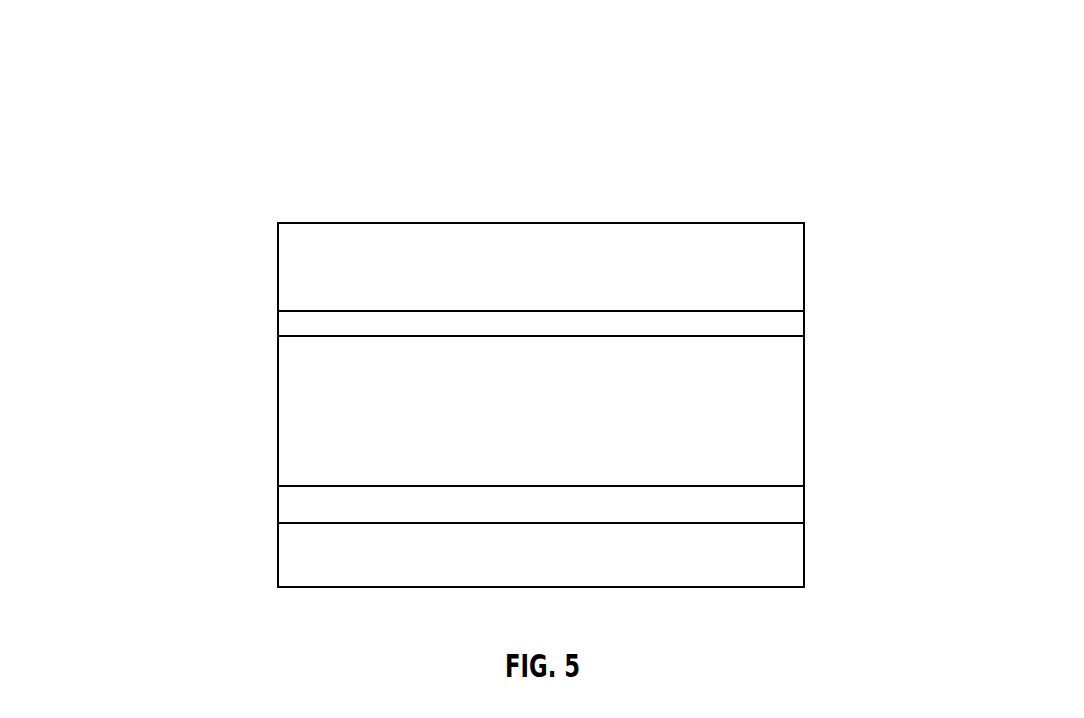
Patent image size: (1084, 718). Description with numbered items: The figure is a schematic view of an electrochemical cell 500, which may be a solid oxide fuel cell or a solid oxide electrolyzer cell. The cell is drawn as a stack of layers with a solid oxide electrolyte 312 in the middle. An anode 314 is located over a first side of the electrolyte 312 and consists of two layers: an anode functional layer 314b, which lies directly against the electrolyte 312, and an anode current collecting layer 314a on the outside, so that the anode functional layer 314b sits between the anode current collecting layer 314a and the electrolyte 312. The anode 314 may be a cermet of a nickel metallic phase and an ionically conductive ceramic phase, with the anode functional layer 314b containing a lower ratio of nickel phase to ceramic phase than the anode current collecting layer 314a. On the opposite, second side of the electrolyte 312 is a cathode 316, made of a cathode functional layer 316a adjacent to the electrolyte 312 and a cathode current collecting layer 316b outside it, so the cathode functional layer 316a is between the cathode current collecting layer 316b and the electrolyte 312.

The electrochemical cell 500 is at (757, 42).
The cathode 316 is at (236, 341).
The cathode current collecting layer 316b is at (814, 261).
The cathode functional layer 316a is at (813, 320).
The solid oxide electrolyte 312 is at (814, 422).
The anode functional layer 314b is at (814, 499).
The anode current collecting layer 314a is at (814, 564).
The anode 314 is at (223, 585).